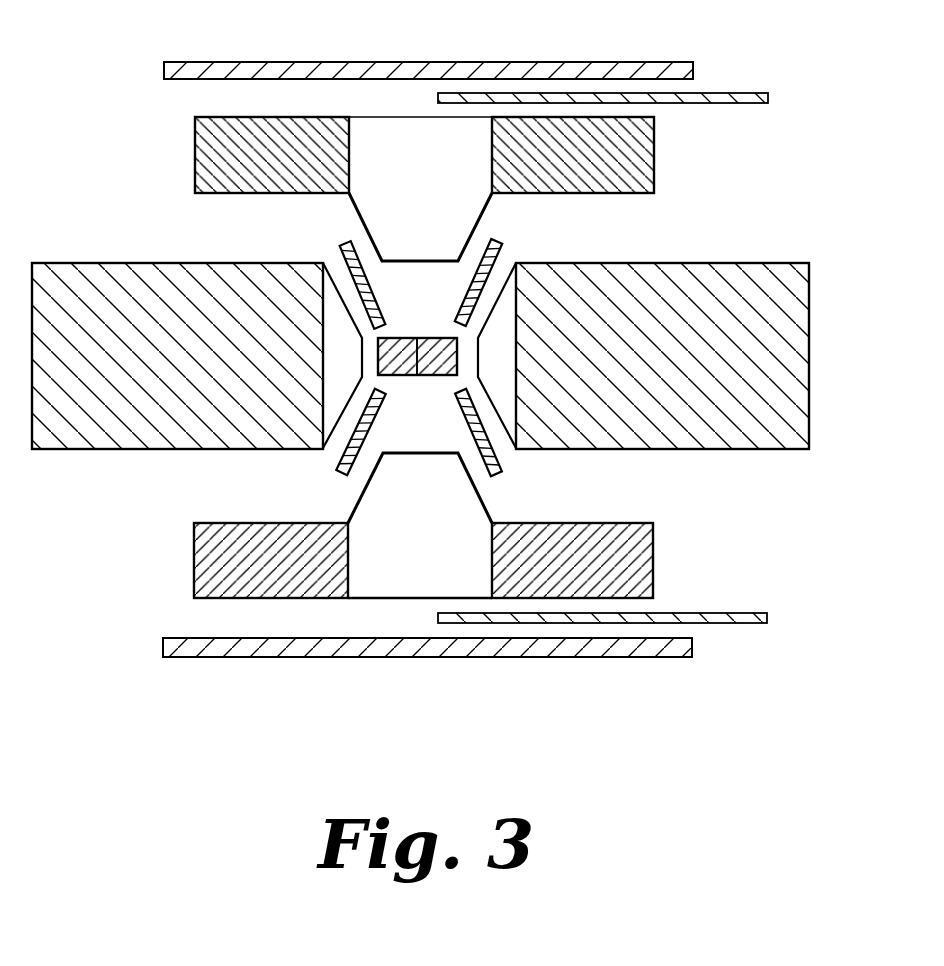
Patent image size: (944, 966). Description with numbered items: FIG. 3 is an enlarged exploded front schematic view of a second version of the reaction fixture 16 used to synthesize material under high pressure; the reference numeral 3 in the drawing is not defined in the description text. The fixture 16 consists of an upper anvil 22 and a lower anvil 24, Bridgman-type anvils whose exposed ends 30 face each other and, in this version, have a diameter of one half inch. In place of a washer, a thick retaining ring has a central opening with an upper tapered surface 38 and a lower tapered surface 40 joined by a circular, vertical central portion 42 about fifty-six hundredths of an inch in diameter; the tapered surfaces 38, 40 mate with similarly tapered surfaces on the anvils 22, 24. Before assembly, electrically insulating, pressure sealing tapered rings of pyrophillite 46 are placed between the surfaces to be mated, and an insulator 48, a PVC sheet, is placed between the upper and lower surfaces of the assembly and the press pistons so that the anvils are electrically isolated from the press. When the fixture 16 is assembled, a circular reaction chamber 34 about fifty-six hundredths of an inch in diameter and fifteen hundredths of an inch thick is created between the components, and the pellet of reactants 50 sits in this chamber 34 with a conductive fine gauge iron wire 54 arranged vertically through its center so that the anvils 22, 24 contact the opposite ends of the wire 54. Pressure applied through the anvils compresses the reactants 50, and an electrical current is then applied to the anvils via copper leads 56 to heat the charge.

The electrode block 3 is at (809, 347).
The reaction fixture 16 is at (771, 169).
The upper anvil 22 is at (307, 117).
The lower anvil 24 is at (217, 600).
The exposed end 30 is at (405, 260).
The reaction chamber 34 is at (403, 338).
The upper tapered surface 38 is at (330, 268).
The lower tapered surface 40 is at (335, 420).
The vertical central portion 42 is at (367, 358).
The pyrophillite rings 46 is at (358, 250).
The insulator 48 is at (410, 62).
The reactants 50 is at (417, 331).
The iron wire 54 is at (420, 338).
The copper leads 56 is at (743, 93).